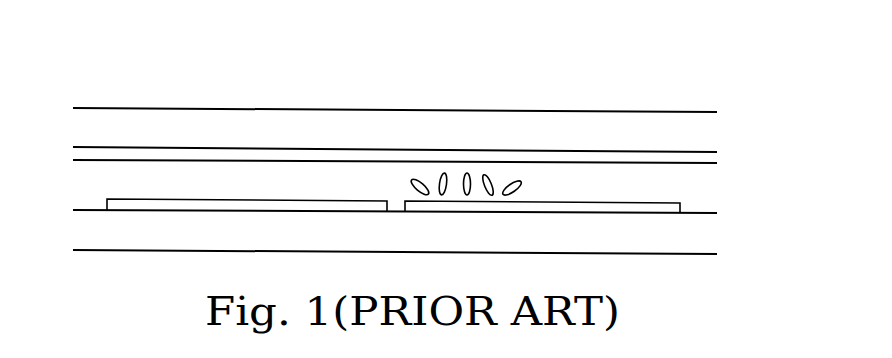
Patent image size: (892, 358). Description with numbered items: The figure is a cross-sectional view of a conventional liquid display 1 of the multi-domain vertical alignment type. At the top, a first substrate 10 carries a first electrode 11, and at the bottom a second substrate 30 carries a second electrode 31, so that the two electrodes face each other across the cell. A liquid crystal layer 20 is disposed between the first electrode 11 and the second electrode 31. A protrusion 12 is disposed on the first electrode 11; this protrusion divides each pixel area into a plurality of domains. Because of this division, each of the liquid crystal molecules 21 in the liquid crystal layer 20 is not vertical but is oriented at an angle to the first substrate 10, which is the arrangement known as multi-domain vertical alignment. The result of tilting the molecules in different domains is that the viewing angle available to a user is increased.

The liquid display 1 is at (403, 78).
The first substrate 10 is at (707, 137).
The first electrode 11 is at (707, 155).
The protrusion 12 is at (532, 163).
The liquid crystal layer 20 is at (218, 181).
The liquid crystal molecules 21 is at (491, 175).
The second substrate 30 is at (707, 252).
The second electrode 31 is at (180, 207).